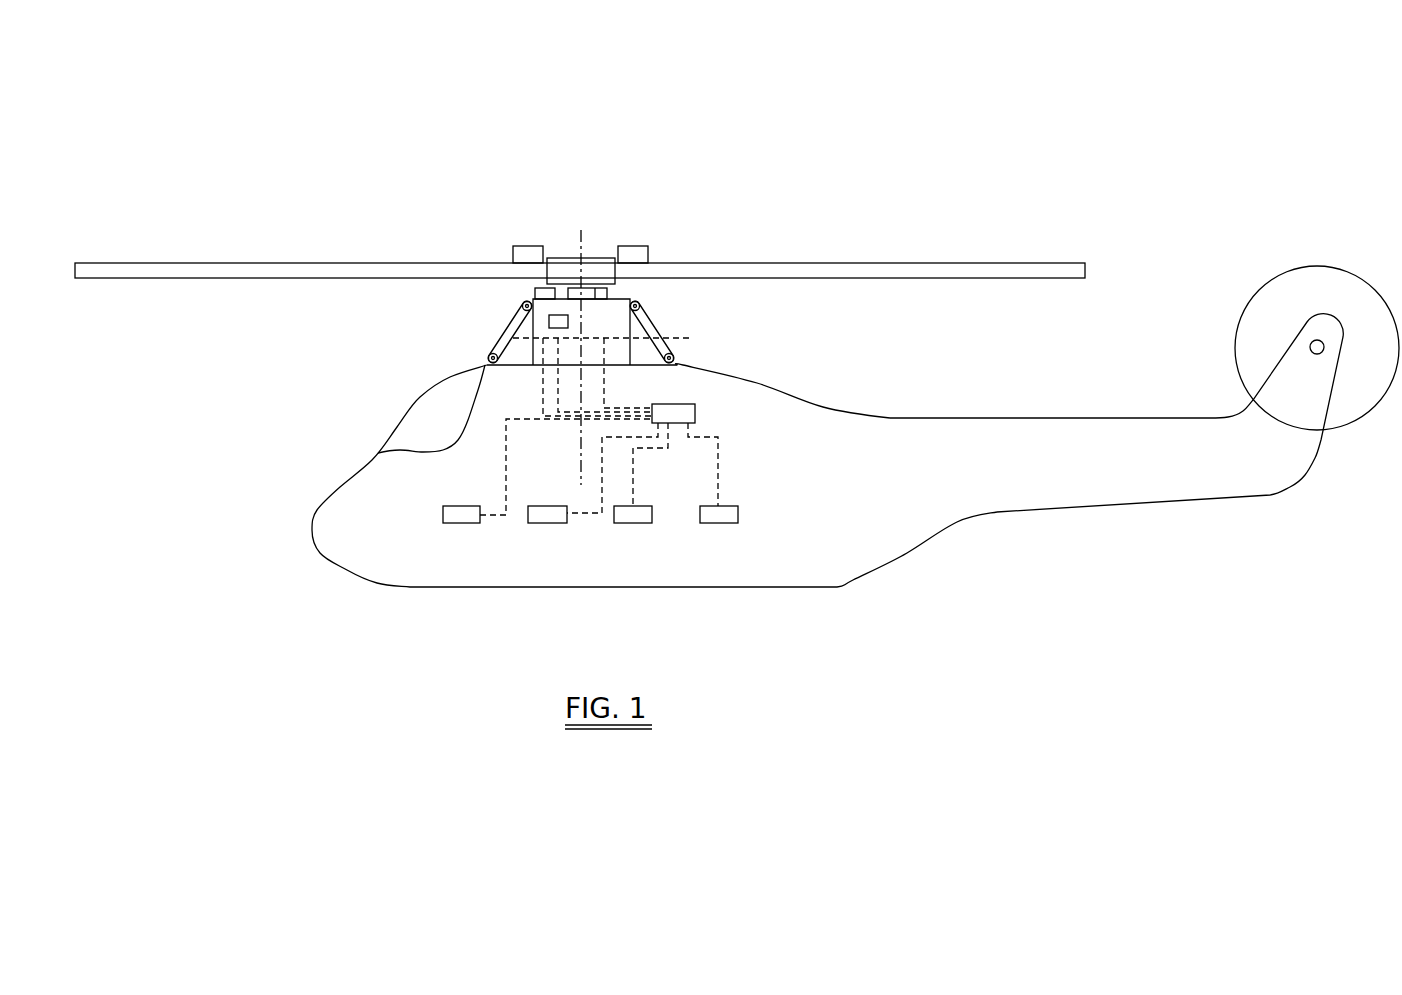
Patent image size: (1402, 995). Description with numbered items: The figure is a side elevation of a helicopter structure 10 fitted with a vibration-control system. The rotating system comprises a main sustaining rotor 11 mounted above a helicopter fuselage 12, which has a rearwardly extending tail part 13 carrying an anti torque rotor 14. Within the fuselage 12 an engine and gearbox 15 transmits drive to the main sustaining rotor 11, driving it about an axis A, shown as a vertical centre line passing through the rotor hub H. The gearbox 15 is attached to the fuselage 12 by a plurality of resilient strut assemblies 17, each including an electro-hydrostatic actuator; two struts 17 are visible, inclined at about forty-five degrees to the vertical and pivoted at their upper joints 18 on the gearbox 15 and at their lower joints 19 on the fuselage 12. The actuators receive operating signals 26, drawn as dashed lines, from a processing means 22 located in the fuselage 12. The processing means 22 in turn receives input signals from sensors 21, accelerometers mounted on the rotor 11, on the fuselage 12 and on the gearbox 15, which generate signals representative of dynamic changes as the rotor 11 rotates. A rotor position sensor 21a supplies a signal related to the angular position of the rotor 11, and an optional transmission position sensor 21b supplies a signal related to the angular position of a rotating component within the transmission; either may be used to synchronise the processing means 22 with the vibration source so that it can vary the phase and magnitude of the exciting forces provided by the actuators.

The helicopter structure 10 is at (703, 218).
The main sustaining rotor 11 is at (970, 268).
The helicopter fuselage 12 is at (842, 542).
The tail part 13 is at (1095, 487).
The anti torque rotor 14 is at (1302, 264).
The engine and gearbox 15 is at (623, 322).
The resilient strut assembly 17 is at (508, 326).
The upper strut joint 18 is at (640, 302).
The lower strut joint 19 is at (673, 357).
The sensor 21 is at (527, 250).
The rotor position sensor 21a is at (537, 294).
The transmission position sensor 21b is at (568, 320).
The processing means 22 is at (695, 412).
The operating signals 26 is at (605, 373).
The axis A is at (578, 240).
The rotor hub H is at (600, 260).